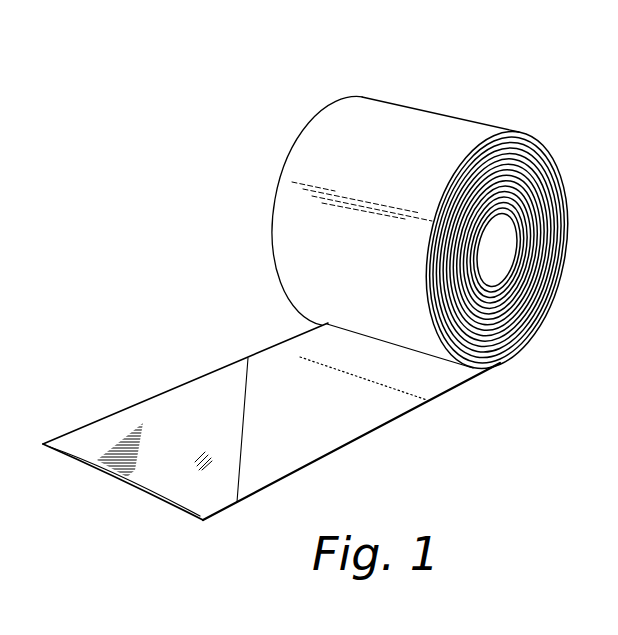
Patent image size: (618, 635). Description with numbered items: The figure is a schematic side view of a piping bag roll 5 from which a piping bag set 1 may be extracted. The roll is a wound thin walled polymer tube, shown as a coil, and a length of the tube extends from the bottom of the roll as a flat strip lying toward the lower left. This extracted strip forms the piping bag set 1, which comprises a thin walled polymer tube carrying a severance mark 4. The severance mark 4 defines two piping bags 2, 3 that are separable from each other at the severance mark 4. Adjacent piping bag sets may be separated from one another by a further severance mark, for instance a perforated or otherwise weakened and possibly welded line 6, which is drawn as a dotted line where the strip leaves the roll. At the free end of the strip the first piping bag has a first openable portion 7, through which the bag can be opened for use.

The piping bag set 1 is at (113, 359).
The first piping bag 2 is at (98, 448).
The second piping bag 3 is at (333, 422).
The severance mark 4 is at (243, 439).
The piping bag roll 5 is at (423, 128).
The perforated line 6 is at (300, 357).
The first openable portion 7 is at (96, 478).